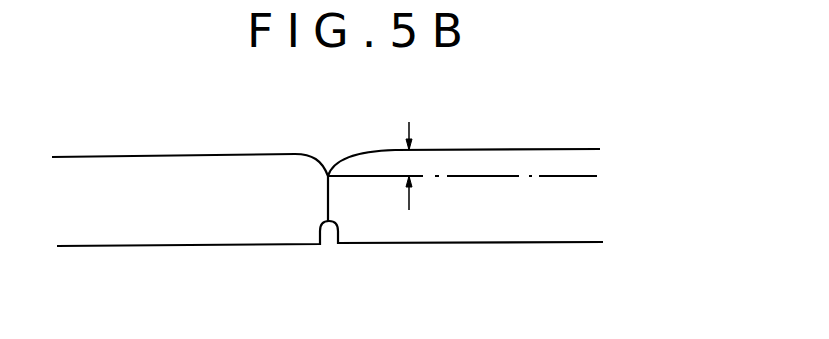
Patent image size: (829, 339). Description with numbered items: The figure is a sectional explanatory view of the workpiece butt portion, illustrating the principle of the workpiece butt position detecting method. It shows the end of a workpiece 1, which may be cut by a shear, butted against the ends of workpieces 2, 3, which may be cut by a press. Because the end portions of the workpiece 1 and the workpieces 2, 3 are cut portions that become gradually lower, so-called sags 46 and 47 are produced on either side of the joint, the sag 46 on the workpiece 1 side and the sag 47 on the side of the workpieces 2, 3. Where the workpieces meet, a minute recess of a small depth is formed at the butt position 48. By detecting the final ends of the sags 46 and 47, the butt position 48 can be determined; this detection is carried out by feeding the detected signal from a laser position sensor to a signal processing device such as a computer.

The workpiece 1 is at (155, 156).
The workpiece 2 is at (497, 123).
The workpiece 3 is at (503, 150).
The sag 46 is at (327, 174).
The sag 47 is at (355, 153).
The butt position 48 is at (327, 198).